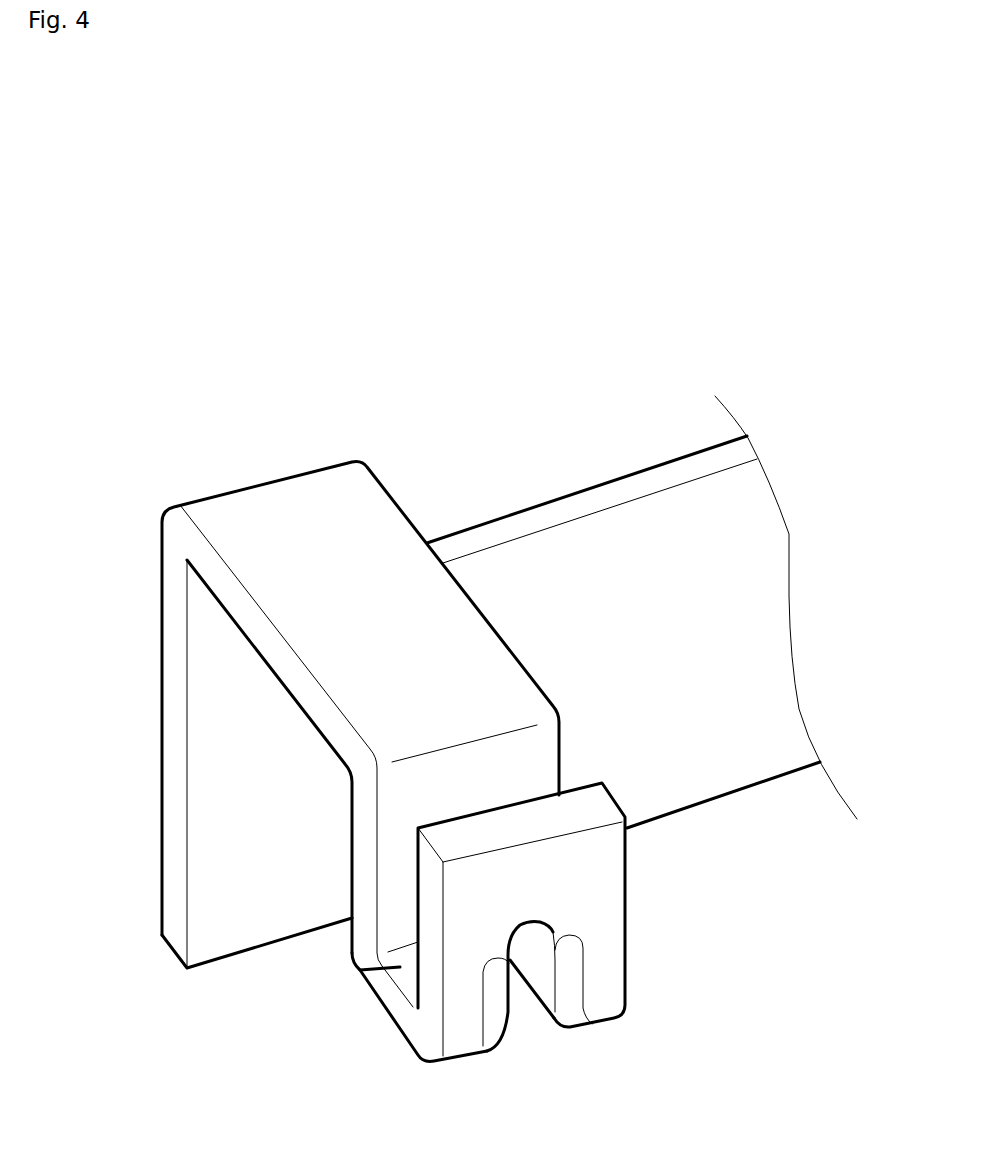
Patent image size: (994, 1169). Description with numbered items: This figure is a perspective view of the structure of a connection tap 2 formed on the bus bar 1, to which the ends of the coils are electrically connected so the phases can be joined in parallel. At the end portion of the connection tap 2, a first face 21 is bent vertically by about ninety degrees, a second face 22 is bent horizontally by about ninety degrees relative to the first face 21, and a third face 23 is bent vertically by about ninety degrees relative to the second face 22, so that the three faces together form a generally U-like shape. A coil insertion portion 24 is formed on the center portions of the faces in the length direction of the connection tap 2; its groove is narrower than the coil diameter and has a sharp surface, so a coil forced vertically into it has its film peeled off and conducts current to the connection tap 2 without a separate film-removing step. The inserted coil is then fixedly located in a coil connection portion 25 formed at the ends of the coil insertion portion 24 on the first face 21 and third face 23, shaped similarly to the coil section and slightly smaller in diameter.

The bus bar 1 is at (560, 513).
The connection tap 2 is at (278, 508).
The first face 21 is at (366, 969).
The second face 22 is at (392, 1020).
The third face 23 is at (597, 877).
The coil insertion portion 24 is at (567, 973).
The coil connection portion 25 is at (537, 938).